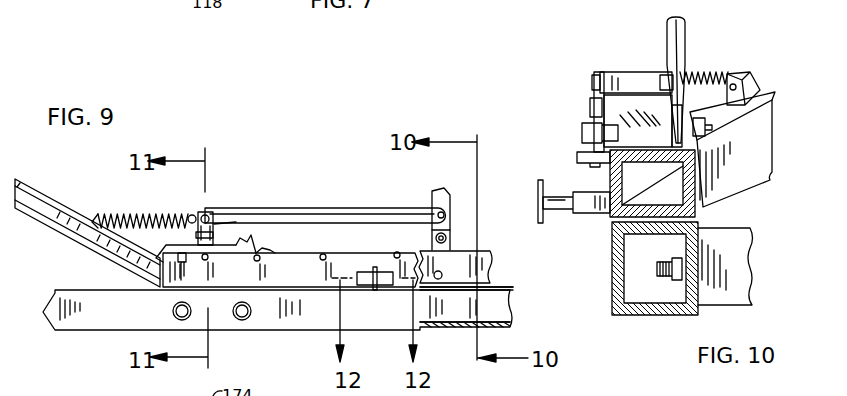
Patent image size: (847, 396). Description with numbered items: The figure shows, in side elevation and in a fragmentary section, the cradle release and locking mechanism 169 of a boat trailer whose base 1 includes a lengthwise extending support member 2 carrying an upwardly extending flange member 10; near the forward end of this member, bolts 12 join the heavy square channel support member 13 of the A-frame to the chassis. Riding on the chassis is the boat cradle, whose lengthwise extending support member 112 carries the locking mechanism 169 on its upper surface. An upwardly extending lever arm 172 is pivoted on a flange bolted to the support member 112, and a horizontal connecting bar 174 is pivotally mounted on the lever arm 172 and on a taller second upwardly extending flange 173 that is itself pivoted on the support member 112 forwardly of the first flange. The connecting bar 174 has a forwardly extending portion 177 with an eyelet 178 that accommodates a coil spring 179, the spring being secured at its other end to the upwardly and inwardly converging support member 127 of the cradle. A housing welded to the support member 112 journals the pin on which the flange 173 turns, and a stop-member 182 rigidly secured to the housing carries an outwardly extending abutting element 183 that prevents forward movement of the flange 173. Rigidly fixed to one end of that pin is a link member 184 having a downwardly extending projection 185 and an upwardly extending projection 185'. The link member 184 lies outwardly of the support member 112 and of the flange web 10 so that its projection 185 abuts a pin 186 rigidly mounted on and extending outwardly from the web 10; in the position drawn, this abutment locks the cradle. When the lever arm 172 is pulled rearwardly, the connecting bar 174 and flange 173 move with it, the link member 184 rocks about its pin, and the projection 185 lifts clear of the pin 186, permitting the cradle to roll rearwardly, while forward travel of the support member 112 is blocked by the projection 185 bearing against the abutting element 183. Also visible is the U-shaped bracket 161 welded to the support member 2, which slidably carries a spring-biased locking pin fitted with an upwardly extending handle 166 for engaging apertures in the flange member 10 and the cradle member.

In FIG. 9, the base 1 is at (512, 297).
In FIG. 9, the lengthwise extending support member 2 is at (512, 313).
In FIG. 9, the upwardly extending flange member 10 is at (300, 267).
In FIG. 10, the upwardly extending flange member 10 is at (608, 179).
In FIG. 9, the bolts 12 is at (245, 320).
In FIG. 10, the bolts 12 is at (666, 280).
In FIG. 9, the forwardly extending inwardly converging support member 13 is at (105, 318).
In FIG. 10, the forwardly extending inwardly converging support member 13 is at (733, 240).
In FIG. 9, the lengthwise extending support member 112 is at (494, 260).
In FIG. 10, the lengthwise extending support member 112 is at (750, 174).
In FIG. 10, the upwardly and inwardly converging support member 127 is at (752, 83).
In FIG. 9, the U-shaped bracket 161 is at (398, 325).
In FIG. 10, the U-shaped bracket 161 is at (597, 215).
In FIG. 10, the handle 166 is at (538, 178).
In FIG. 9, the cradle release and locking mechanism 169 is at (222, 203).
In FIG. 9, the lever arm 172 is at (445, 190).
In FIG. 10, the lever arm 172 is at (684, 40).
In FIG. 9, the second upwardly extending flange 173 is at (212, 228).
In FIG. 10, the second upwardly extending flange 173 is at (603, 72).
In FIG. 9, the horizontal connecting bar 174 is at (362, 217).
In FIG. 10, the horizontal connecting bar 174 is at (617, 77).
In FIG. 9, the forwardly extending portion 177 is at (198, 212).
In FIG. 9, the eyelet 178 is at (190, 215).
In FIG. 9, the coil spring 179 is at (117, 212).
In FIG. 10, the coil spring 179 is at (703, 73).
In FIG. 9, the stop-member 182 is at (197, 236).
In FIG. 10, the outwardly extending abutting element 183 is at (590, 103).
In FIG. 9, the link member 184 is at (258, 247).
In FIG. 9, the downwardly extending projection 185 is at (175, 264).
In FIG. 9, the upwardly extending projection 185' is at (273, 197).
In FIG. 9, the pin 186 is at (185, 262).
In FIG. 10, the pin 186 is at (578, 157).